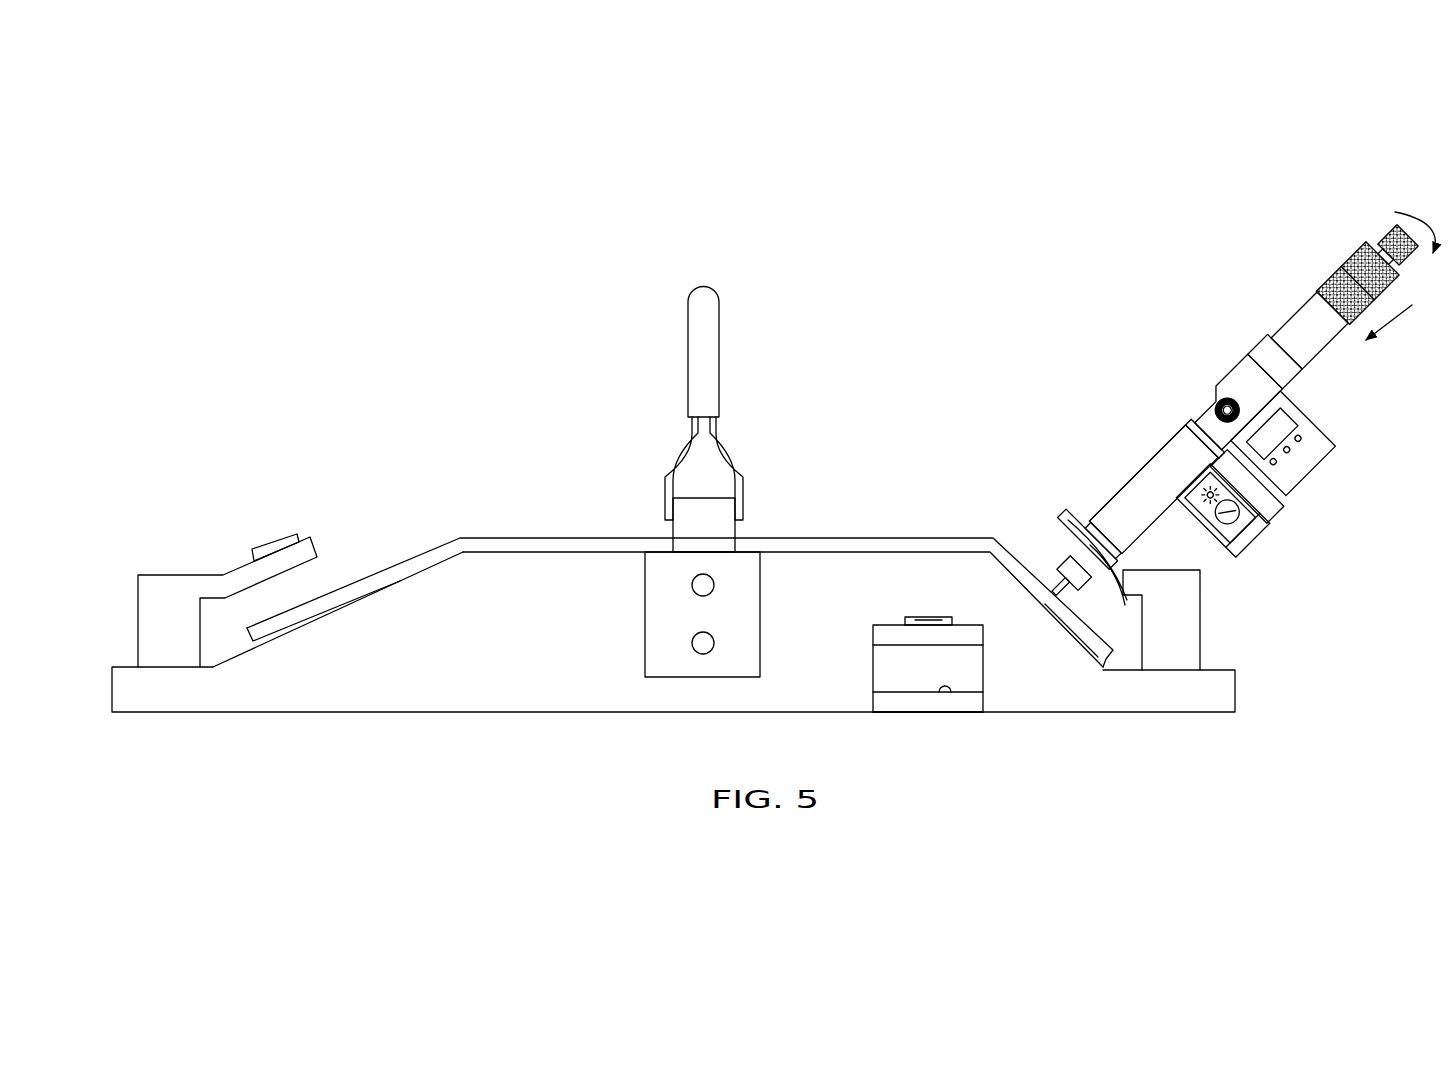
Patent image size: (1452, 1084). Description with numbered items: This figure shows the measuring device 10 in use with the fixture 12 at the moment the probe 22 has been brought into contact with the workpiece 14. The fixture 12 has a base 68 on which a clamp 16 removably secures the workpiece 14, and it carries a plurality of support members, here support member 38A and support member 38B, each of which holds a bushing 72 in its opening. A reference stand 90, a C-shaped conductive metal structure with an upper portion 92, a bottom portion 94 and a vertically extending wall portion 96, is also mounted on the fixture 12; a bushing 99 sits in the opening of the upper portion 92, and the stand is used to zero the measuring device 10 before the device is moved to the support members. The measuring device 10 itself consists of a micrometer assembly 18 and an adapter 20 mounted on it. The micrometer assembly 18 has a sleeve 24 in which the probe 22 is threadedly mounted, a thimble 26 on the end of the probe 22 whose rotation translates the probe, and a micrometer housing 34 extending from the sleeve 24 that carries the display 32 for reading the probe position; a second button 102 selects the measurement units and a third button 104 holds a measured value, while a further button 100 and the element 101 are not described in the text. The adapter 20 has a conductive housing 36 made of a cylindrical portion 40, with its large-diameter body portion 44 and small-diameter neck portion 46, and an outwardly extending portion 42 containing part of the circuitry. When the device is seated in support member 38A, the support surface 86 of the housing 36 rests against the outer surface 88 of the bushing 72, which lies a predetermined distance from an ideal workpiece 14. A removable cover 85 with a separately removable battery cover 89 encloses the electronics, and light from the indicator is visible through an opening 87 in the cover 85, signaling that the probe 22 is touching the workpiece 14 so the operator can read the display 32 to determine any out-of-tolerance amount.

The measuring device 10 is at (1295, 262).
The fixture 12 is at (378, 690).
The workpiece 14 is at (503, 537).
The clamp 16 is at (726, 362).
The micrometer assembly 18 is at (1278, 297).
The adapter 20 is at (1150, 432).
The probe 22 is at (1066, 578).
The sleeve 24 is at (1270, 362).
The thimble 26 is at (1320, 352).
The display 32 is at (1280, 410).
The micrometer housing 34 is at (1300, 488).
The housing 36 is at (1230, 548).
The support member 38A is at (1185, 642).
The support member 38B is at (165, 590).
The cylindrical portion 40 is at (1155, 459).
The outwardly extending portion 42 is at (1275, 506).
The body portion 44 is at (1130, 487).
The neck portion 46 is at (1070, 565).
The base 68 is at (435, 687).
The bushing 72 is at (276, 540).
The removable cover 85 is at (1263, 537).
The support surface 86 is at (1062, 522).
The opening 87 is at (1208, 490).
The outer surface 88 is at (915, 617).
The battery cover 89 is at (1217, 520).
The reference stand 90 is at (870, 668).
The upper portion 92 is at (973, 636).
The bottom portion 94 is at (977, 701).
The wall portion 96 is at (977, 669).
The bushing 99 is at (936, 618).
The indicator 100 is at (1278, 464).
The wire 101 is at (949, 698).
The second button 102 is at (1292, 451).
The third button 104 is at (1303, 436).